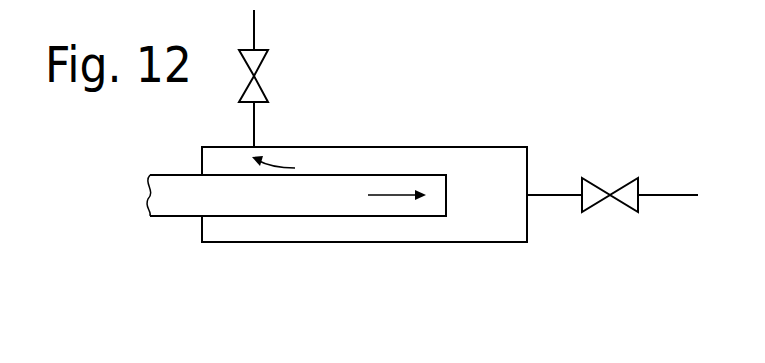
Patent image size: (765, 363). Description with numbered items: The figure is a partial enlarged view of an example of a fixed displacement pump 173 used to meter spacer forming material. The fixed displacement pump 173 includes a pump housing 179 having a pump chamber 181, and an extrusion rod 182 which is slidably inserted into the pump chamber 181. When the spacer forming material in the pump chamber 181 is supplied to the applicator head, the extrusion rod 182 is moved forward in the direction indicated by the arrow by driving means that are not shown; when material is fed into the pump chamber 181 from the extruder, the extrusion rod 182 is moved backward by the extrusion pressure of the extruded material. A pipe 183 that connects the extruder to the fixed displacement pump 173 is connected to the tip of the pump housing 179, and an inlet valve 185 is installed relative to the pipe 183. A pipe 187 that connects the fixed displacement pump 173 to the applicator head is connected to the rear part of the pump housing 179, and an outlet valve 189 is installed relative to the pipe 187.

The fixed displacement pump 173 is at (526, 140).
The pump housing 179 is at (495, 147).
The pump chamber 181 is at (432, 162).
The extrusion rod 182 is at (345, 197).
The pipe 183 is at (678, 190).
The inlet valve 185 is at (623, 203).
The pipe 187 is at (254, 33).
The outlet valve 189 is at (263, 88).